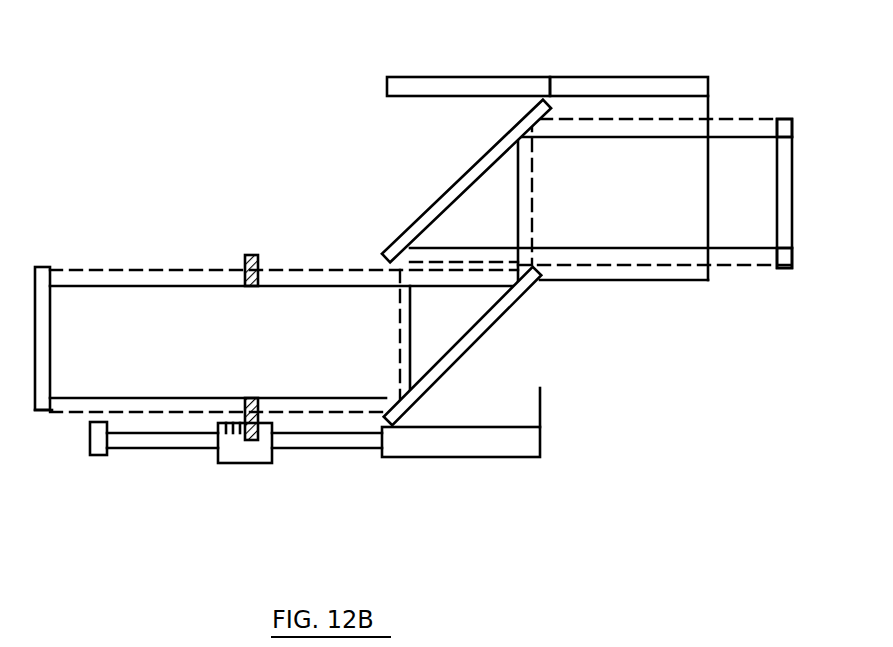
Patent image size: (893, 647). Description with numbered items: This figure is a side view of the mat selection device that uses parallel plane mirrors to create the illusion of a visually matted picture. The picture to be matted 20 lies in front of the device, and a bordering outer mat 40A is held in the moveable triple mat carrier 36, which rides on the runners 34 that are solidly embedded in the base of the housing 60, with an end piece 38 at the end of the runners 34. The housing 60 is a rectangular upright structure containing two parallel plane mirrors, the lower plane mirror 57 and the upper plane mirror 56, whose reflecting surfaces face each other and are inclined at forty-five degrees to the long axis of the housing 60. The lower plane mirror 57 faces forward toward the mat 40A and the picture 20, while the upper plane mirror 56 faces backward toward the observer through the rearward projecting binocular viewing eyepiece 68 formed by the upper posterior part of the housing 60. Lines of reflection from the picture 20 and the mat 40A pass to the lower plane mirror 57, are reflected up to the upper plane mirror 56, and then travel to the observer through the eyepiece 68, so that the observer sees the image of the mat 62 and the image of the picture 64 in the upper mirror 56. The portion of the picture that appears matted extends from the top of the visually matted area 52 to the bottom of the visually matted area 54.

The picture to be matted 20 is at (417, 265).
The runners 34 is at (244, 478).
The moveable triple mat carrier 36 is at (304, 471).
The end piece 38 is at (146, 487).
The outer mat 40A is at (295, 325).
The top of visually matted area 52 is at (83, 309).
The bottom of visually matted area 54 is at (98, 499).
The upper plane mirror facing observer 56 is at (454, 181).
The lower plane mirror facing mat and picture 57 is at (503, 346).
The housing of parallel plane mirrors 60 is at (506, 268).
The visualized image of mat seen by observer in upper plane mirror 62 is at (816, 183).
The image of picture seen by observer in upper plane mirror 64 is at (813, 193).
The binocular viewing eyepiece 68 is at (679, 151).